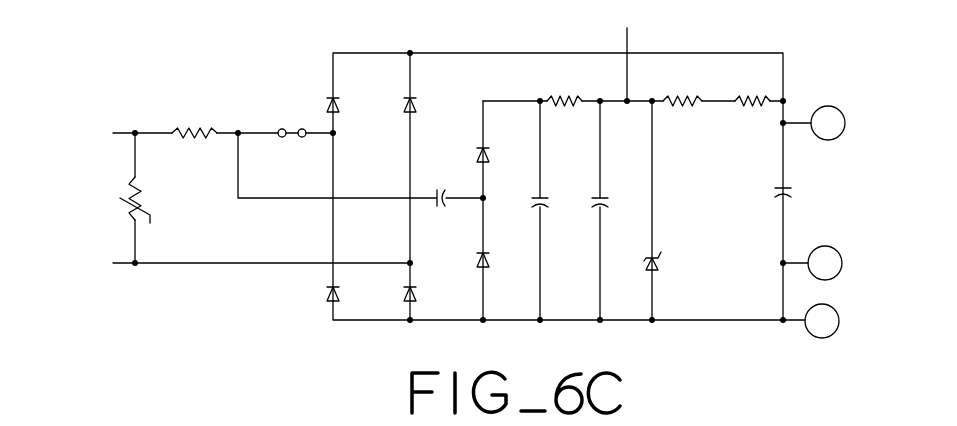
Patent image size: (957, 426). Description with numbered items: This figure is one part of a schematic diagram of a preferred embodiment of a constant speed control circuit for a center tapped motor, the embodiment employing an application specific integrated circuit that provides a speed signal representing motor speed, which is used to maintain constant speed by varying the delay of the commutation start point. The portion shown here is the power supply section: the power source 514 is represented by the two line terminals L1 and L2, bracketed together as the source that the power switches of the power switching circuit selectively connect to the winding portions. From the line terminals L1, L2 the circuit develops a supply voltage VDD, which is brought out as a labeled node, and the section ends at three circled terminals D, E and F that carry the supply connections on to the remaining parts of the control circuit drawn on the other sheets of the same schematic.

The power source 514 is at (90, 102).
The AC line terminal L1 is at (209, 130).
The AC line terminal L2 is at (248, 263).
The supply voltage VDD is at (627, 51).
The output terminal D is at (814, 123).
The output terminal E is at (812, 263).
The output terminal F is at (811, 321).